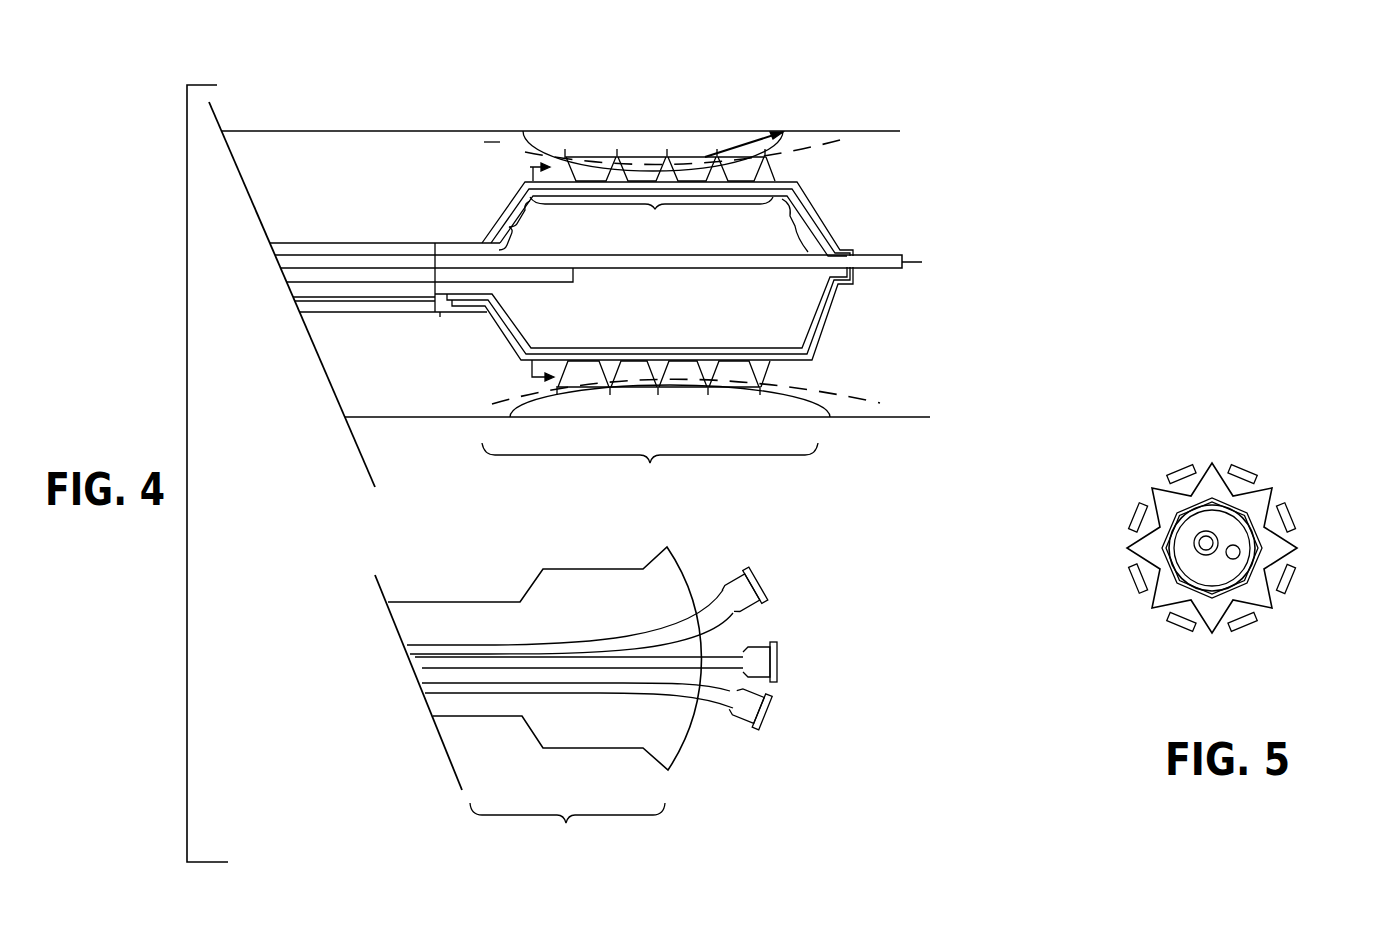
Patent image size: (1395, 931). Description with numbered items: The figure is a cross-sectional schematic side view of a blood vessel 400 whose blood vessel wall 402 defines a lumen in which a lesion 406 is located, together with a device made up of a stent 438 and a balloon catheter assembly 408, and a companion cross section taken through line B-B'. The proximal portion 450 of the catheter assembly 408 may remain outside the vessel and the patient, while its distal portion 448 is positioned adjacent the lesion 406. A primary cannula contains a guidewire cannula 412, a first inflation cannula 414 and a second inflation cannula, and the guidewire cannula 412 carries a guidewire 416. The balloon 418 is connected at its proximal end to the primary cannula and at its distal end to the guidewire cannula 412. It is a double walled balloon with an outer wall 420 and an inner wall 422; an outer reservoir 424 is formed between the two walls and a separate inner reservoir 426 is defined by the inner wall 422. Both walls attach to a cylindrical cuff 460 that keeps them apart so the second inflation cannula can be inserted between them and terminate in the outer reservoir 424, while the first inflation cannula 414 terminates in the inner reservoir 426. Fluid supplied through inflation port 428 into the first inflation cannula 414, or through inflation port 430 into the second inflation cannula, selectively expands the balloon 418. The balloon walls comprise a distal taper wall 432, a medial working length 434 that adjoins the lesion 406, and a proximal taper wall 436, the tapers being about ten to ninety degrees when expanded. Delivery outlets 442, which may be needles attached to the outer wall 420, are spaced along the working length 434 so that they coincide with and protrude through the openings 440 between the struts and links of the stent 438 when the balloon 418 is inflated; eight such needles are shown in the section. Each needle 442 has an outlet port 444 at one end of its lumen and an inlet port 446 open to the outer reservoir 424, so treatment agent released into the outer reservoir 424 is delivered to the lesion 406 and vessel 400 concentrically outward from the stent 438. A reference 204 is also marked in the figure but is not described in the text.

In FIG. 4, the catheter assembly 204 is at (948, 190).
In FIG. 4, the blood vessel 400 is at (830, 95).
In FIG. 4, the blood vessel wall 402 is at (880, 131).
In FIG. 4, the lesion 406 is at (678, 158).
In FIG. 4, the balloon catheter assembly 408 is at (478, 373).
In FIG. 5, the balloon catheter assembly 408 is at (1048, 487).
In FIG. 5, the guidewire cannula 412 is at (1168, 544).
In FIG. 5, the first inflation cannula 414 is at (1242, 546).
In FIG. 4, the guidewire 416 is at (922, 262).
In FIG. 5, the guidewire 416 is at (1206, 546).
In FIG. 4, the balloon 418 is at (797, 305).
In FIG. 5, the balloon 418 is at (1217, 567).
In FIG. 4, the outer balloon wall 420 is at (800, 182).
In FIG. 5, the outer balloon wall 420 is at (1240, 553).
In FIG. 4, the inner balloon wall 422 is at (805, 194).
In FIG. 5, the inner balloon wall 422 is at (1145, 575).
In FIG. 4, the outer reservoir 424 is at (815, 212).
In FIG. 5, the outer reservoir 424 is at (1290, 485).
In FIG. 4, the inner reservoir 426 is at (825, 226).
In FIG. 5, the inner reservoir 426 is at (1280, 510).
In FIG. 4, the inflation port 428 is at (780, 660).
In FIG. 4, the inflation port 430 is at (770, 705).
In FIG. 4, the distal taper wall 432 is at (790, 232).
In FIG. 4, the medial working length 434 is at (651, 216).
In FIG. 4, the proximal taper wall 436 is at (533, 225).
In FIG. 4, the stent 438 is at (492, 141).
In FIG. 5, the stent 438 is at (1172, 474).
In FIG. 4, the openings 440 is at (760, 136).
In FIG. 5, the openings 440 is at (1229, 453).
In FIG. 4, the delivery outlets 442 is at (775, 163).
In FIG. 5, the delivery outlets 442 is at (1228, 462).
In FIG. 4, the outlet port 444 is at (733, 152).
In FIG. 4, the inlet port 446 is at (740, 197).
In FIG. 4, the distal portion 448 is at (650, 470).
In FIG. 4, the proximal portion 450 is at (567, 830).
In FIG. 4, the cuff 460 is at (440, 313).